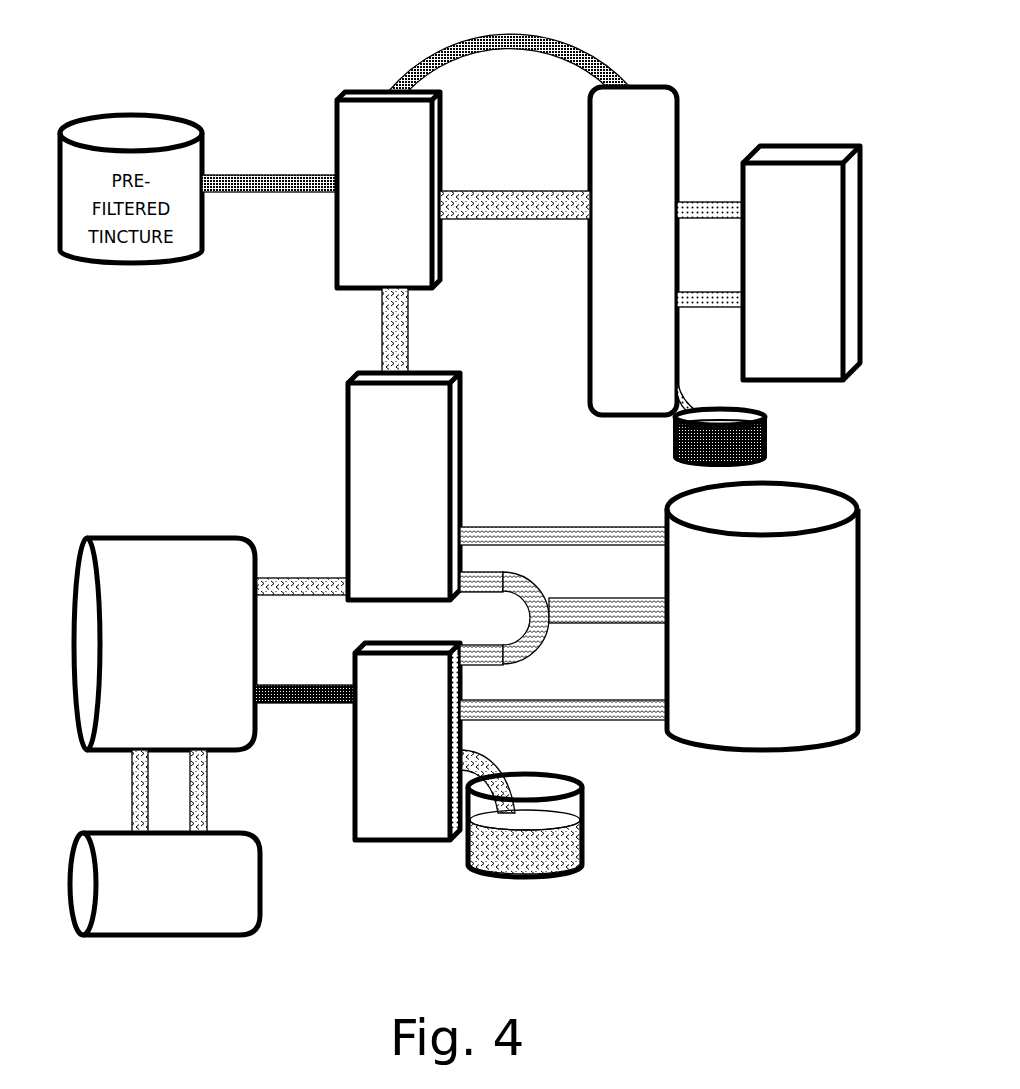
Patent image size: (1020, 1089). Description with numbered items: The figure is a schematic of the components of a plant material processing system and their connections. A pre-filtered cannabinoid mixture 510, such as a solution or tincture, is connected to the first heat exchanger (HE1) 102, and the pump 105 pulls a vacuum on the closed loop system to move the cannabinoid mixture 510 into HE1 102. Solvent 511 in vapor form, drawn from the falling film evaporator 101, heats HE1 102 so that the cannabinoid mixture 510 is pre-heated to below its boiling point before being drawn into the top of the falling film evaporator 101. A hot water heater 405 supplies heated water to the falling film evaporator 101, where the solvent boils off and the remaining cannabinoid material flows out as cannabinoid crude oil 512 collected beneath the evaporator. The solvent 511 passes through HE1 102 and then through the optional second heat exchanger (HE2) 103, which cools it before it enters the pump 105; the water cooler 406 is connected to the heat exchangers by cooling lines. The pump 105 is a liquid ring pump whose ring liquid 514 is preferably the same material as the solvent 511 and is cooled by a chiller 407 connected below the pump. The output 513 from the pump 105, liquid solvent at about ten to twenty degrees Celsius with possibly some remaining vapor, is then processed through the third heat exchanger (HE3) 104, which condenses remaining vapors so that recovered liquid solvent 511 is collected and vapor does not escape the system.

The falling film evaporator 101 is at (683, 111).
The first heat exchanger (HE1) 102 is at (333, 234).
The second heat exchanger (HE2) 103 is at (334, 441).
The third heat exchanger (HE3) 104 is at (421, 846).
The pump 105 is at (159, 532).
The hot water heater 405 is at (815, 385).
The water cooler 406 is at (780, 755).
The chiller 407 is at (168, 943).
The cannabinoid mixture 510 is at (390, 67).
The solvent 511 is at (411, 327).
The cannabinoid crude oil 512 is at (670, 447).
The output from the pump 513 is at (305, 708).
The liquid for the pump ring 514 is at (210, 793).